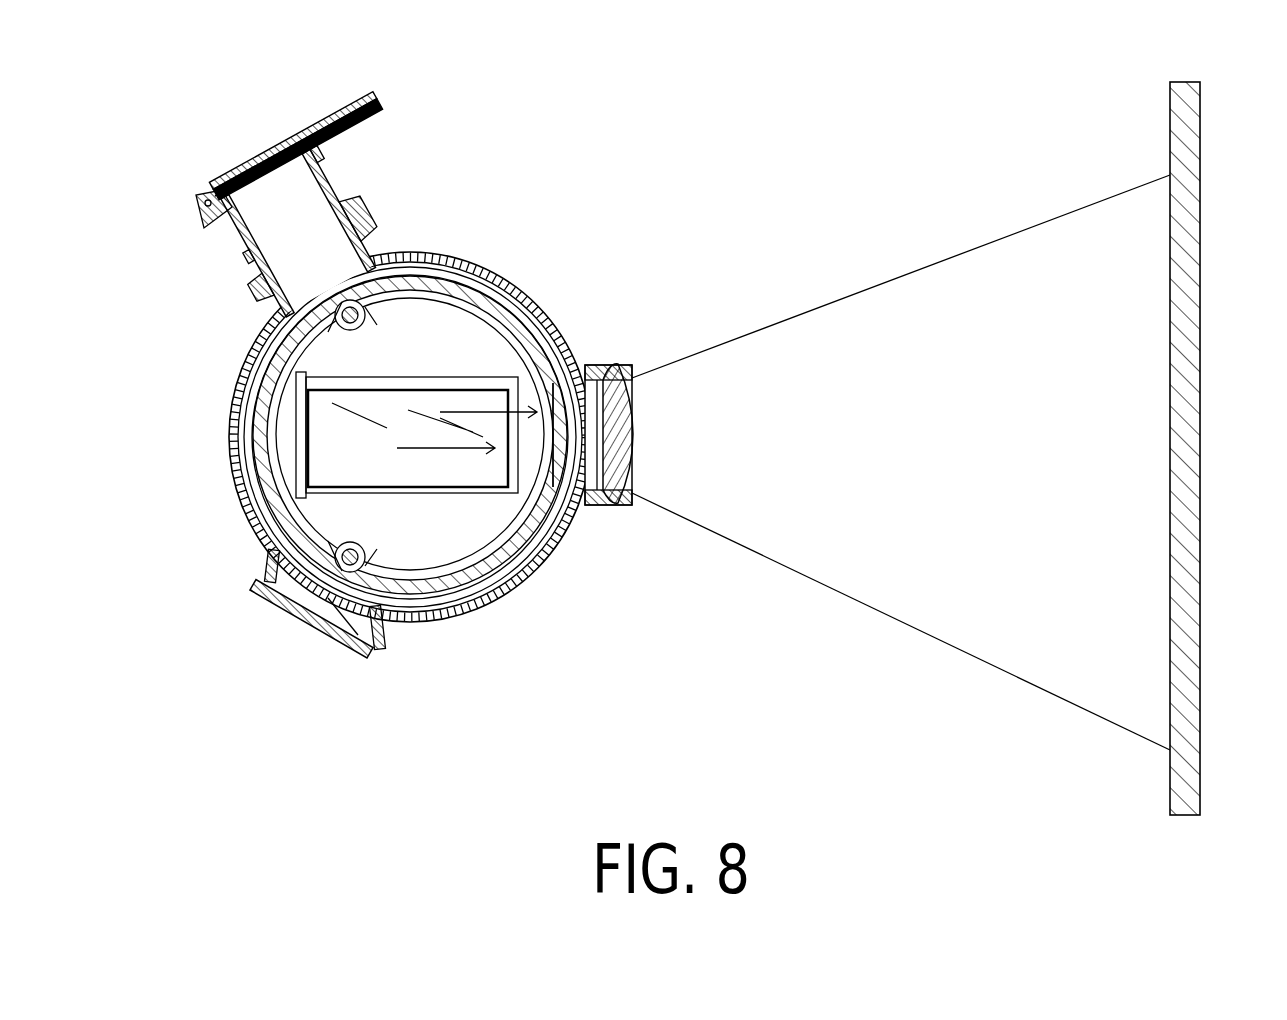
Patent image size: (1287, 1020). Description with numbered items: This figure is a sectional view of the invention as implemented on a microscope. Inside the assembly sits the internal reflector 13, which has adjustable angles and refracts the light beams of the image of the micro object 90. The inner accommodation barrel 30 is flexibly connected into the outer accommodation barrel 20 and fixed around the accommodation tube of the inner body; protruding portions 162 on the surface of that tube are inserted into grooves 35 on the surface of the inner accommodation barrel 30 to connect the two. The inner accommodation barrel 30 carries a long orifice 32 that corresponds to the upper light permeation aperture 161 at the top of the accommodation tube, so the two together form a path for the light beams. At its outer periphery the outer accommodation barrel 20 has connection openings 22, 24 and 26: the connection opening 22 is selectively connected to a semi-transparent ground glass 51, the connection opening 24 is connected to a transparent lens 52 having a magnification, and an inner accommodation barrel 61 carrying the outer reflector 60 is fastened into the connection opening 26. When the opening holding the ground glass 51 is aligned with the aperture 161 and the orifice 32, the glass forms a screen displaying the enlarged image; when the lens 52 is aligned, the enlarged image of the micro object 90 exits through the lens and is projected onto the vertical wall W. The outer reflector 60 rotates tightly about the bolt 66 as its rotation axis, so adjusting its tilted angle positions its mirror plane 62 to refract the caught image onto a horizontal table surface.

The internal reflector 13 is at (375, 468).
The outer accommodation barrel 20 is at (520, 287).
The connection opening 22 is at (612, 370).
The connection opening 24 is at (375, 645).
The connection opening 26 is at (382, 254).
The inner accommodation barrel 30 is at (545, 307).
The long orifice 32 is at (557, 450).
The grooves 35 is at (313, 360).
The semi-transparent ground glass 51 is at (637, 423).
The transparent lens 52 is at (303, 620).
The outer reflector 60 is at (270, 145).
The inner accommodation barrel 61 is at (342, 206).
The mirror plane 62 is at (240, 178).
The bolt 66 is at (203, 192).
The micro object 90 is at (1170, 455).
The upper light permeation aperture 161 is at (553, 443).
The protruding portions 162 is at (410, 290).
The vertical wall W is at (1188, 393).